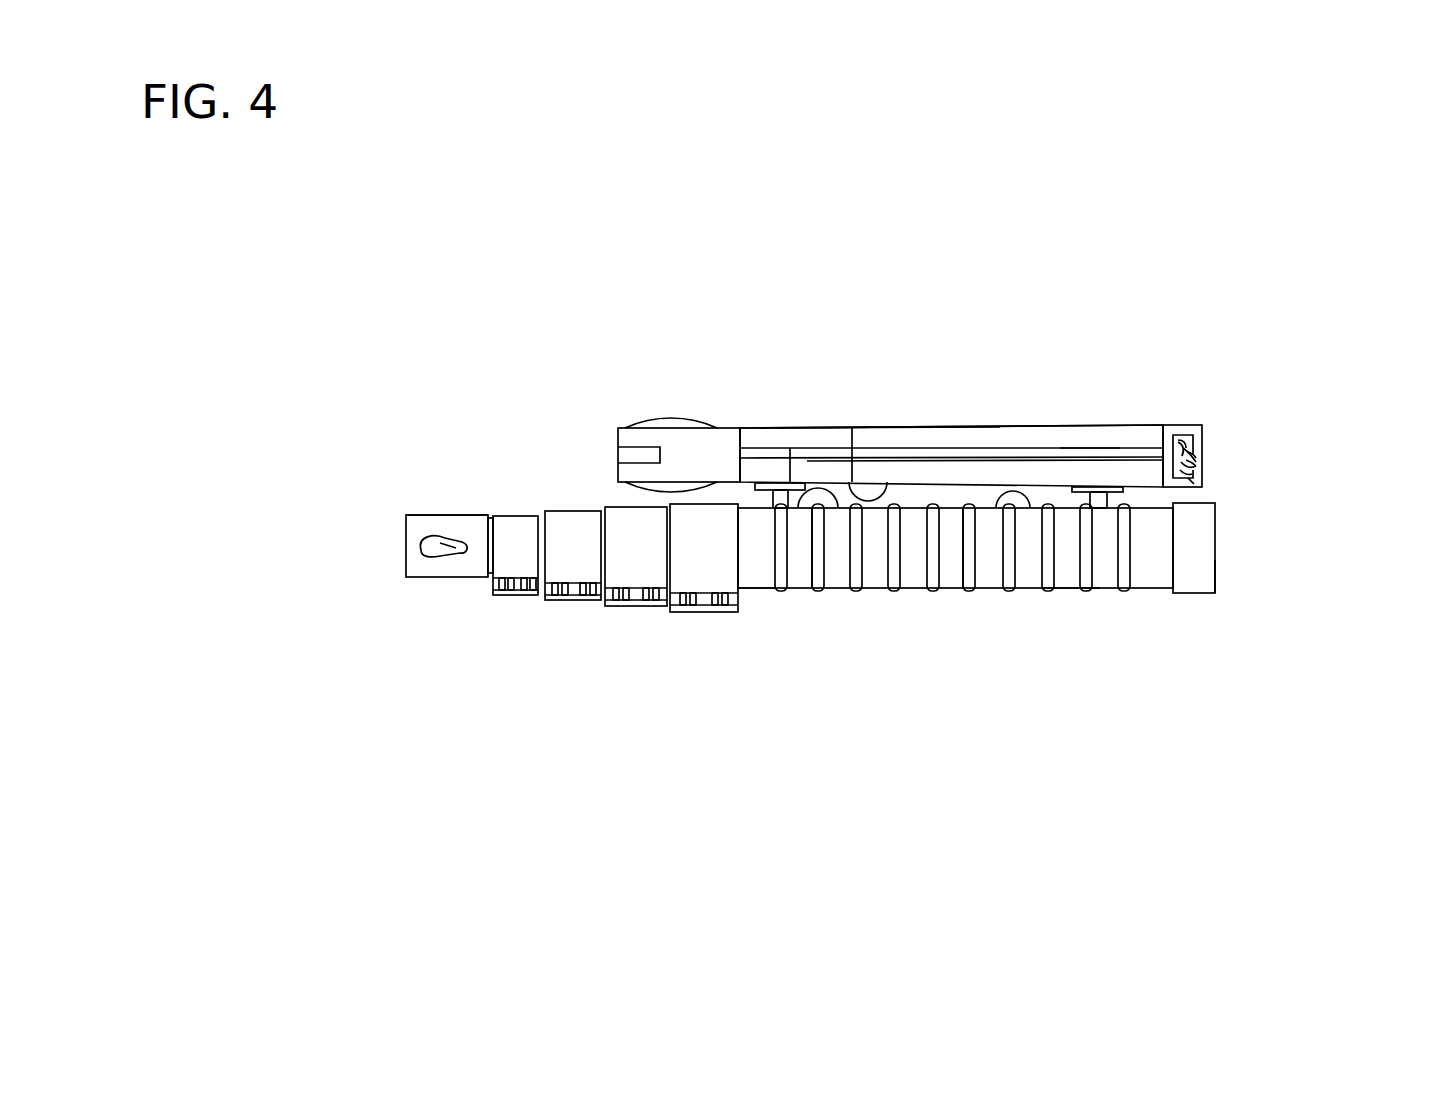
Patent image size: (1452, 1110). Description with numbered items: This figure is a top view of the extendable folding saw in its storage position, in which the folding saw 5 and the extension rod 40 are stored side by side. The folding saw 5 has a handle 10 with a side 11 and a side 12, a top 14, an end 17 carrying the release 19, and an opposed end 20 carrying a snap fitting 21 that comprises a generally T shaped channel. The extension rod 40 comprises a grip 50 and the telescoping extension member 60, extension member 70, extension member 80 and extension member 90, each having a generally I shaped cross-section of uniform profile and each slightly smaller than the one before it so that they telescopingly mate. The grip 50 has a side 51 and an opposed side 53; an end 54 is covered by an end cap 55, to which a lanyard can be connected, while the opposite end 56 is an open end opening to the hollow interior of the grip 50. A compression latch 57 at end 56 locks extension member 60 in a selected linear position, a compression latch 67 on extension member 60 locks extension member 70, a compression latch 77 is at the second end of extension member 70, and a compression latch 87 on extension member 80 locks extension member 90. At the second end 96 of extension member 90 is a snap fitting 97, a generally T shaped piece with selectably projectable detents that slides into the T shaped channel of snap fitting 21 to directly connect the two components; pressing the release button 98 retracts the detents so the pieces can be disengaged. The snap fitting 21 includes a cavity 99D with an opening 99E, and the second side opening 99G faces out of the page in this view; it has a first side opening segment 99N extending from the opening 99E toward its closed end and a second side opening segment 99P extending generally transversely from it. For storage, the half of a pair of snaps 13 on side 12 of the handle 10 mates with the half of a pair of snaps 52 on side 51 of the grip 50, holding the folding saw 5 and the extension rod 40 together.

The folding saw 5 is at (895, 425).
The handle 10 is at (1018, 425).
The side 11 is at (873, 428).
The side 12 is at (852, 428).
The half of a pair of snaps 13 is at (790, 482).
The top 14 is at (1088, 440).
The end 17 is at (738, 428).
The release 19 is at (717, 428).
The opposed end 20 is at (1145, 440).
The snap fitting 21 is at (1218, 445).
The extension rod 40 is at (1032, 590).
The grip 50 is at (1046, 651).
The side 51 is at (990, 500).
The half of a pair of snaps 52 is at (843, 484).
The opposed side 53 is at (1065, 588).
The end 54 is at (1217, 537).
The end cap 55 is at (1215, 575).
The end 56 is at (742, 588).
The compression latch 57 is at (737, 610).
The extension member 60 is at (584, 530).
The compression latch 67 is at (633, 607).
The extension member 70 is at (534, 526).
The compression latch 77 is at (580, 600).
The extension member 80 is at (465, 572).
The compression latch 87 is at (518, 597).
The extension member 90 is at (366, 509).
The second end 96 is at (428, 515).
The snap fitting 97 is at (405, 548).
The release button 98 is at (437, 550).
The second side opening segment 99P is at (1190, 432).
The first side opening segment 99N is at (1200, 452).
The opening 99E is at (1198, 462).
The cavity 99D is at (1192, 474).
The second side opening 99G is at (1187, 483).